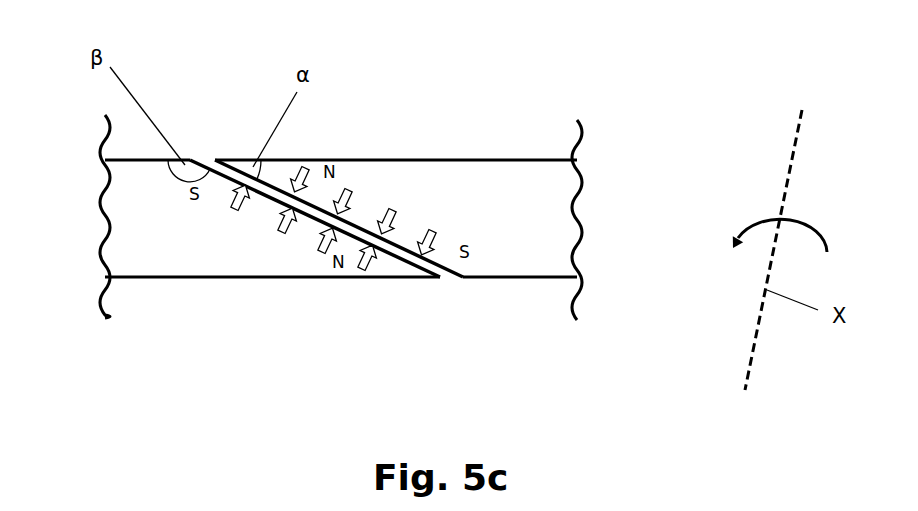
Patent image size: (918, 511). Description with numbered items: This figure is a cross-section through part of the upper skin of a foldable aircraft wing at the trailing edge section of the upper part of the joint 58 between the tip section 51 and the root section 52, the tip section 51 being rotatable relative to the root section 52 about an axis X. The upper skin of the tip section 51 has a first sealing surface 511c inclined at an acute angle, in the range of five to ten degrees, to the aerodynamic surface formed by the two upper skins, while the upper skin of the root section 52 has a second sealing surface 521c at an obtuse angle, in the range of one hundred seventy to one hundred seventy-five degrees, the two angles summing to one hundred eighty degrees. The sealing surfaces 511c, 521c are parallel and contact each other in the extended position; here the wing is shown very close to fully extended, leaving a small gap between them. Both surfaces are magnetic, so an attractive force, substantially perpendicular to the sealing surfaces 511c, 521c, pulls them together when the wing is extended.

The tip section 51 is at (398, 190).
The root section 52 is at (270, 242).
The first sealing surface 511c is at (365, 228).
The second sealing surface 521c is at (308, 216).
The joint 58 is at (203, 143).